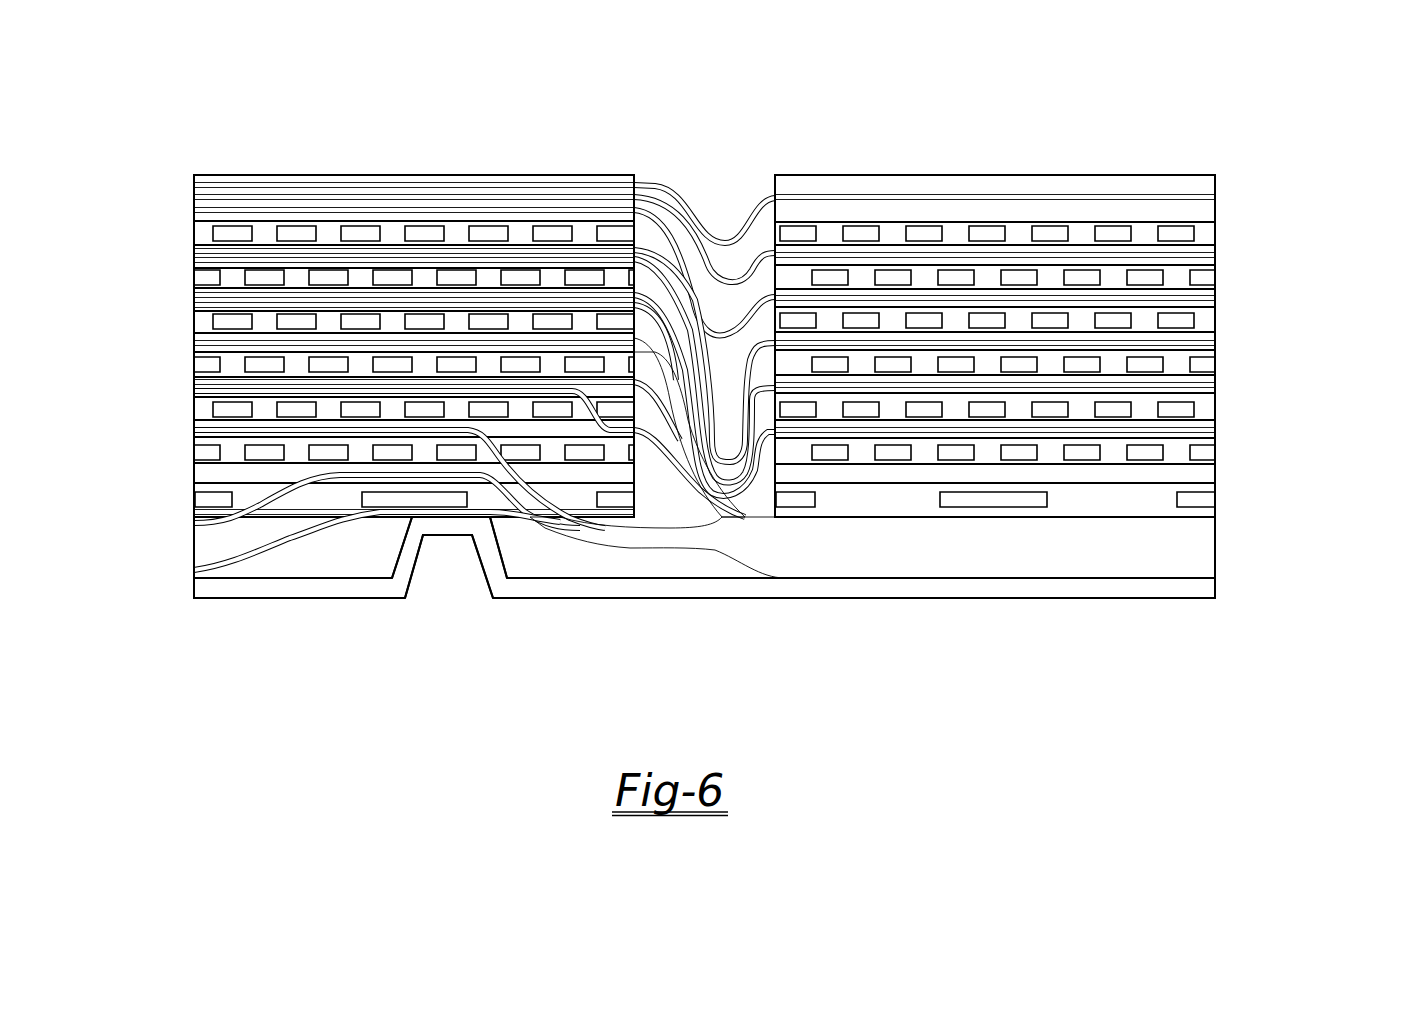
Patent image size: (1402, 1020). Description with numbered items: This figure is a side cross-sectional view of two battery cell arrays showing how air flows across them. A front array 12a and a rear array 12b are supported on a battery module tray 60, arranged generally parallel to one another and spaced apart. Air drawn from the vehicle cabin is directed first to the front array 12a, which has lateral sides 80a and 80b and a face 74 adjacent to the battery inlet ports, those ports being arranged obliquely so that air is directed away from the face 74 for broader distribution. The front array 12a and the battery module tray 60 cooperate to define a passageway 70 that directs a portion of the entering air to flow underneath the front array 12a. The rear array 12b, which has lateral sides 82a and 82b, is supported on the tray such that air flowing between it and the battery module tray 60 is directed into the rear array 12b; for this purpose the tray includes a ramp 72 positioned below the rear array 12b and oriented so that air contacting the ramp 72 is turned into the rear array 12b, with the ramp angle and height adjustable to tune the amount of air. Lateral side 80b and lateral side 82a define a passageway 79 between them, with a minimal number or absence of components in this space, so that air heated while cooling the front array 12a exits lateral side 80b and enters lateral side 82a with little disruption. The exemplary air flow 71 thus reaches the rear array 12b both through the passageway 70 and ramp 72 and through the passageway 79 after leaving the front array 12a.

The front array 12a is at (1020, 175).
The rear array 12b is at (450, 175).
The battery module tray 60 is at (313, 588).
The passageway 70 is at (1005, 548).
The air flow 71 is at (1210, 298).
The ramp 72 is at (445, 537).
The face 74 is at (1188, 332).
The passageway 79 is at (716, 198).
The lateral side 80a is at (1185, 383).
The lateral side 80b is at (773, 225).
The lateral side 82a is at (636, 233).
The lateral side 82b is at (194, 320).